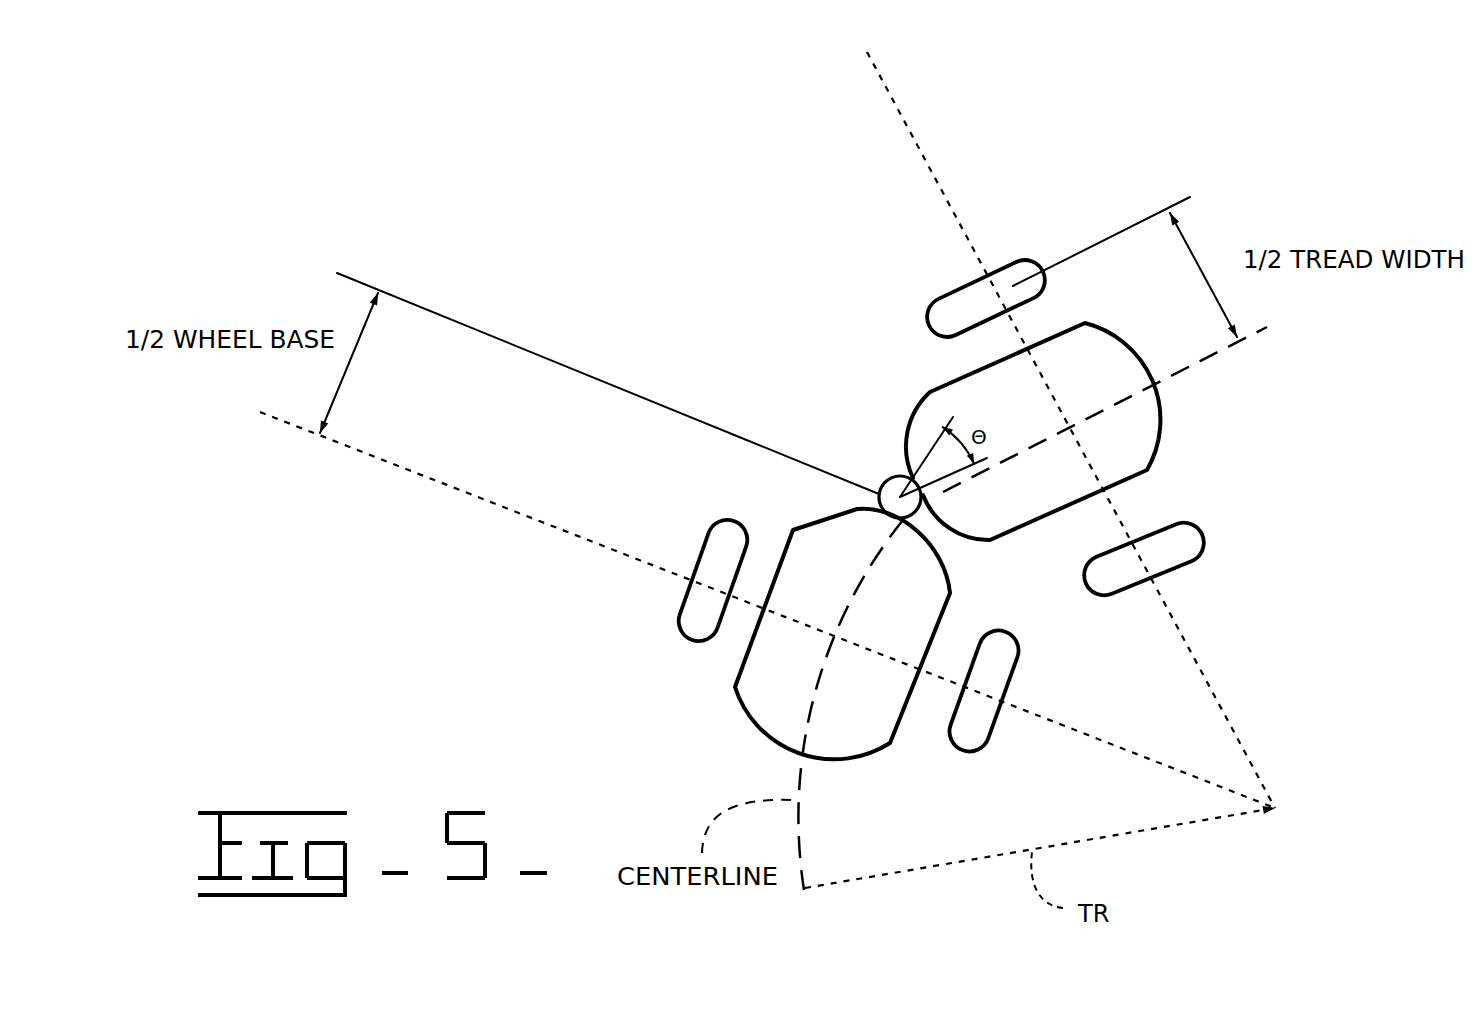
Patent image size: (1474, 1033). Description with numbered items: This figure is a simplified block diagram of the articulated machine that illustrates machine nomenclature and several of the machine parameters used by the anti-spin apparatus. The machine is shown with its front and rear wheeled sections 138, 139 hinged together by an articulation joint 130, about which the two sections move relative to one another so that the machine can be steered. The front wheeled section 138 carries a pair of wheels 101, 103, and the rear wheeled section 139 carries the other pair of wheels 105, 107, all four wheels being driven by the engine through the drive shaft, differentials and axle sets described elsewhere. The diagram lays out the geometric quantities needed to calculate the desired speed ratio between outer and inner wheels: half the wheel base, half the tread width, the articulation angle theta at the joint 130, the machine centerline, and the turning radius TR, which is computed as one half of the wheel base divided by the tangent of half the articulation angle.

The wheel 101 is at (1008, 262).
The wheel 103 is at (1175, 528).
The wheel 105 is at (976, 648).
The wheel 107 is at (705, 530).
The articulation joint 130 is at (897, 477).
The front wheeled section 138 is at (1267, 440).
The rear wheeled section 139 is at (697, 750).